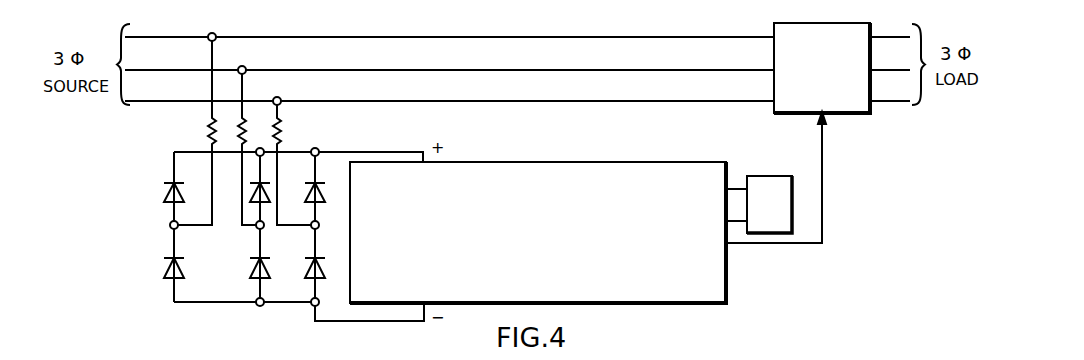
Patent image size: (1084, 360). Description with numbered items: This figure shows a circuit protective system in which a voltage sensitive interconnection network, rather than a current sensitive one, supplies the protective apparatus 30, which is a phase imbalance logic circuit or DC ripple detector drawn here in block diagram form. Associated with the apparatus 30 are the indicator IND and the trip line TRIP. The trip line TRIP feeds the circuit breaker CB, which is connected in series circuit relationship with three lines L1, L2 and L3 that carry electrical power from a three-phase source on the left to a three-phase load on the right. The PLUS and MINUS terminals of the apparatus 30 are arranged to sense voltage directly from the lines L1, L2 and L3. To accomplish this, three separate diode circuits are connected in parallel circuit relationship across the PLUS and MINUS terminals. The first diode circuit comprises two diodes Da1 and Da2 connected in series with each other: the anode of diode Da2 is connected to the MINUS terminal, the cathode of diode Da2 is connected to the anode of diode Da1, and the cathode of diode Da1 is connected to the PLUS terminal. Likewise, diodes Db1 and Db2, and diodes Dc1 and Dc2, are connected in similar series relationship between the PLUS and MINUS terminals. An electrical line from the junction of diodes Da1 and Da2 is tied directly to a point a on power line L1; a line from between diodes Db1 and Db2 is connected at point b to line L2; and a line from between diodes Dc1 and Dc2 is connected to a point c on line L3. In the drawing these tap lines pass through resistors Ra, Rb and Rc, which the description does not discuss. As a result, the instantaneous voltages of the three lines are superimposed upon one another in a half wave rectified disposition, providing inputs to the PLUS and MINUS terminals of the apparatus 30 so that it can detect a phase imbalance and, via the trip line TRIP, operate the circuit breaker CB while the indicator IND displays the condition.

The line L1 is at (517, 25).
The line L2 is at (517, 58).
The line L3 is at (517, 89).
The circuit breaker CB is at (822, 68).
The point a is at (214, 33).
The point b is at (244, 66).
The point c is at (279, 97).
The resistor Ra is at (209, 131).
The resistor Rb is at (246, 130).
The resistor Rc is at (280, 133).
The diode Da1 is at (168, 195).
The diode Da2 is at (170, 272).
The diode Db1 is at (252, 187).
The diode Db2 is at (256, 272).
The diode Dc1 is at (322, 193).
The diode Dc2 is at (311, 270).
The apparatus 30 is at (530, 238).
The indicator IND is at (759, 204).
The trip line TRIP is at (776, 189).
The PLUS terminal PLUS is at (335, 152).
The MINUS terminal MINUS is at (345, 322).